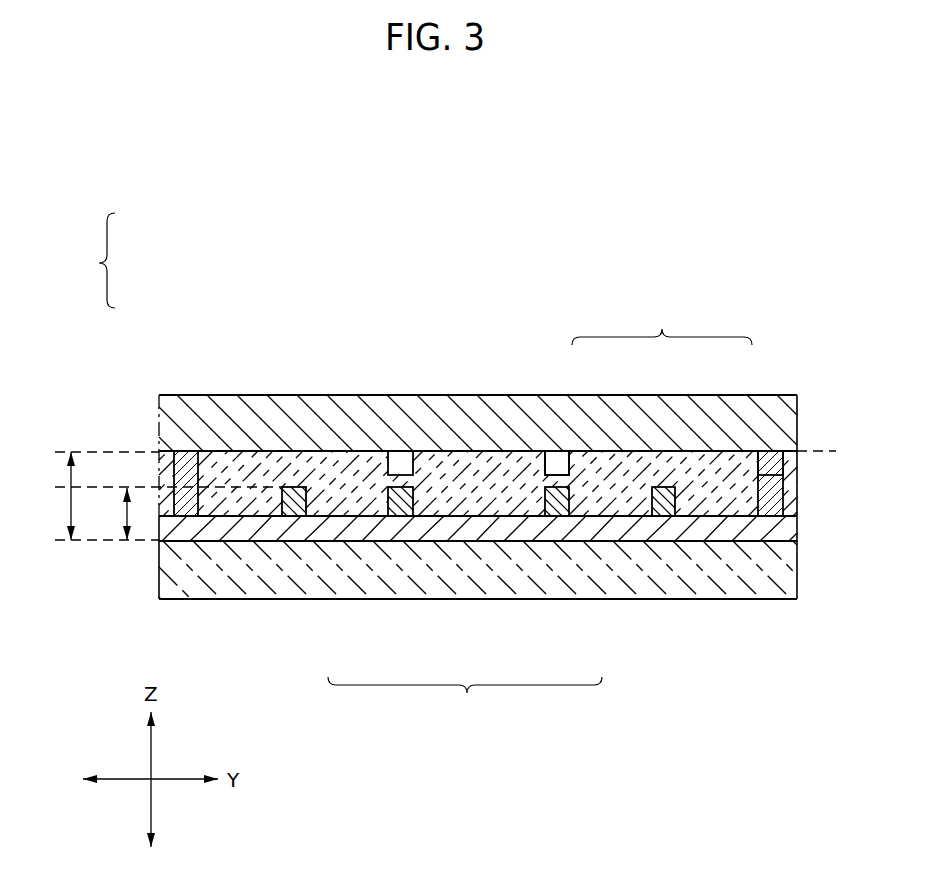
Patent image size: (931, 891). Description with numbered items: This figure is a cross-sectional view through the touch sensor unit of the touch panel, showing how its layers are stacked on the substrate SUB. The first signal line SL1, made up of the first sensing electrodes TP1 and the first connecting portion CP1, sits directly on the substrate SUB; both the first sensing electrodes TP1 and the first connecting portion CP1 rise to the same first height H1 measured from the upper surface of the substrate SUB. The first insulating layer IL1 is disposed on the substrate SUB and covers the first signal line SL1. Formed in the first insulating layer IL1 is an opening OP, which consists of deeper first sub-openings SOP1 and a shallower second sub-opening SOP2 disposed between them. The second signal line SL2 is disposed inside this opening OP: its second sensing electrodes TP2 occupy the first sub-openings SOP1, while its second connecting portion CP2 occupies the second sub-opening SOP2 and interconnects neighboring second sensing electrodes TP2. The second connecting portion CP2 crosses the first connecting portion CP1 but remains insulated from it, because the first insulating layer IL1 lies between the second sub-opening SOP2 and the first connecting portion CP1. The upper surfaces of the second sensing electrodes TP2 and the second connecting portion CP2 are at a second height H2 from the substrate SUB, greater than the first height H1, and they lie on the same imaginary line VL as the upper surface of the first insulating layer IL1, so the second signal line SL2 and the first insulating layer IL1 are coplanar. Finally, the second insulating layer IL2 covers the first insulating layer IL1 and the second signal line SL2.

The second insulating layer IL2 is at (307, 397).
The first insulating layer IL1 is at (714, 500).
The substrate SUB is at (230, 599).
The second sensing electrode TP2 is at (188, 462).
The second connecting portion CP2 is at (401, 462).
The first sensing electrode TP1 is at (295, 505).
The first connecting portion CP1 is at (560, 507).
The second sub-opening SOP2 is at (553, 462).
The first sub-opening SOP1 is at (773, 462).
The opening OP is at (662, 322).
The second signal line SL2 is at (109, 260).
The first signal line SL1 is at (465, 698).
The imaginary line VL is at (815, 455).
The first height H1 is at (168, 513).
The second height H2 is at (98, 496).